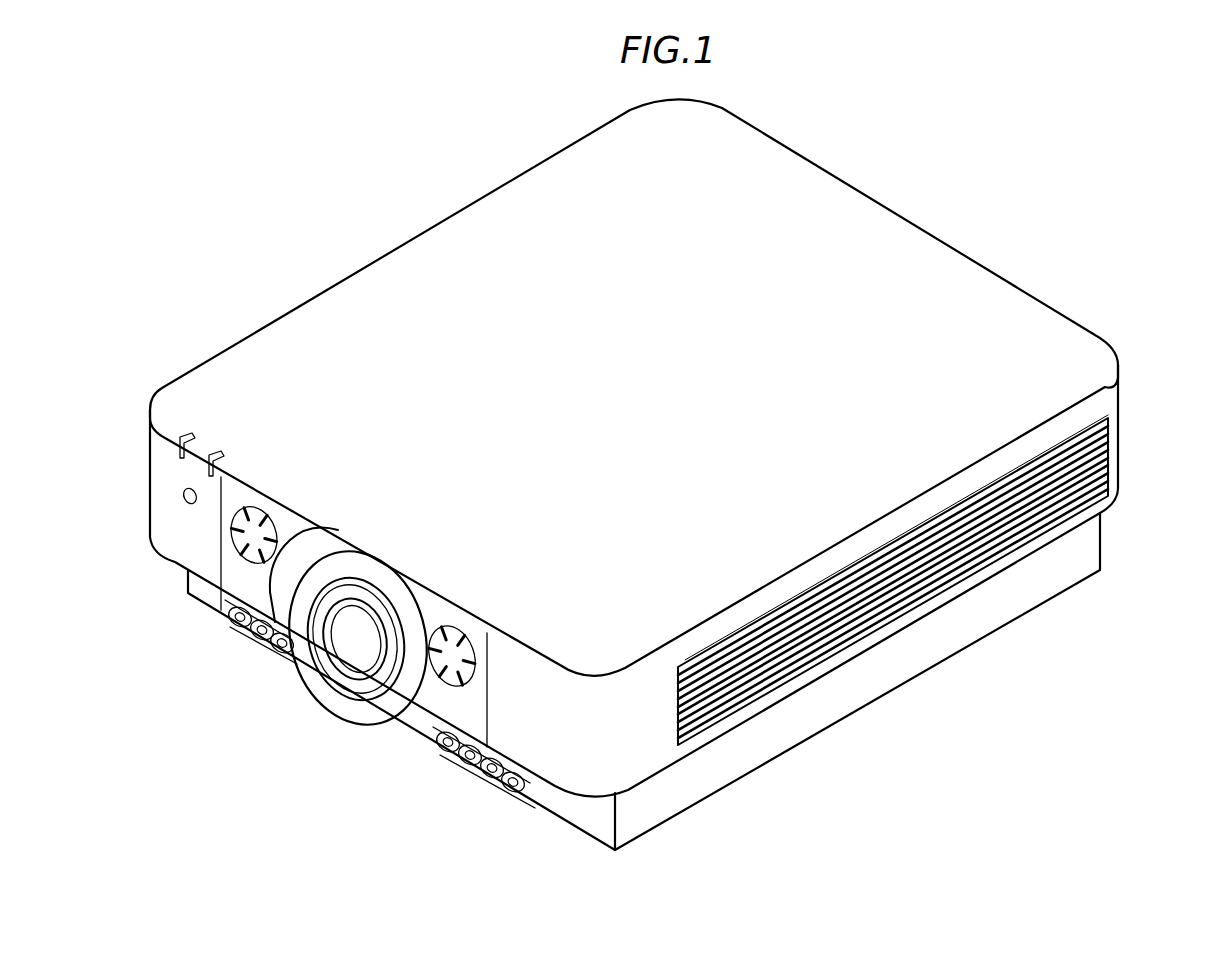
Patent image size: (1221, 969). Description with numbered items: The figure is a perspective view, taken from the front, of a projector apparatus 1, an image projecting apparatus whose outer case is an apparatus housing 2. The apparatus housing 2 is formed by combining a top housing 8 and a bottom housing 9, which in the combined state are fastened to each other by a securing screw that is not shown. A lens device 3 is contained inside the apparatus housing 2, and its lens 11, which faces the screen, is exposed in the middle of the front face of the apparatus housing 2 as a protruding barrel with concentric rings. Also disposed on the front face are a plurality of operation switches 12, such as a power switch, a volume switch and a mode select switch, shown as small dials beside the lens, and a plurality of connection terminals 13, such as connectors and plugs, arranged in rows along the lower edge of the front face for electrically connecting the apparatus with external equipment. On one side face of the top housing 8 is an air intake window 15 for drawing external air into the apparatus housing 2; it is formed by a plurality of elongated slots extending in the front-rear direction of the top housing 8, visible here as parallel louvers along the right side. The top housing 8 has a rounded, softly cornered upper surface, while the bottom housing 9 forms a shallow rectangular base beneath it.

The projector apparatus 1 is at (289, 203).
The apparatus housing 2 is at (1172, 407).
The lens device 3 is at (349, 748).
The top housing 8 is at (1115, 422).
The bottom housing 9 is at (1095, 532).
The lens 11 is at (350, 642).
The operation switches 12 is at (236, 583).
The connection terminals 13 is at (457, 799).
The air intake window 15 is at (905, 583).